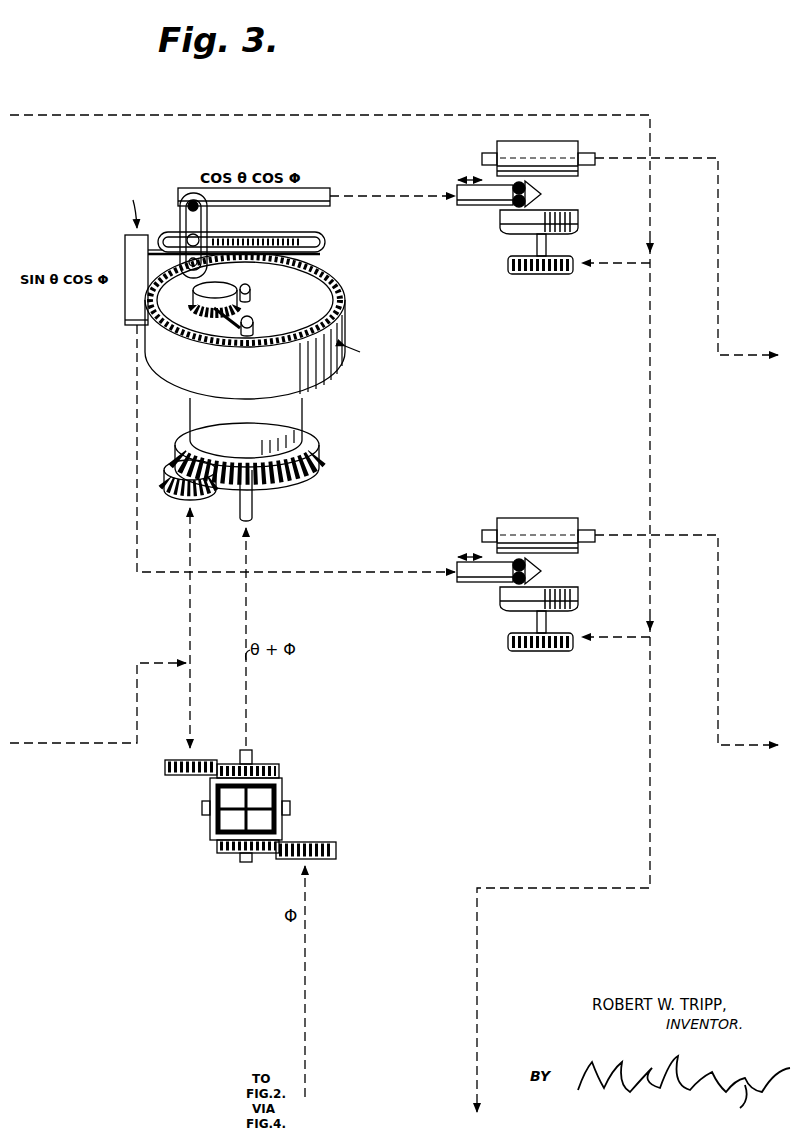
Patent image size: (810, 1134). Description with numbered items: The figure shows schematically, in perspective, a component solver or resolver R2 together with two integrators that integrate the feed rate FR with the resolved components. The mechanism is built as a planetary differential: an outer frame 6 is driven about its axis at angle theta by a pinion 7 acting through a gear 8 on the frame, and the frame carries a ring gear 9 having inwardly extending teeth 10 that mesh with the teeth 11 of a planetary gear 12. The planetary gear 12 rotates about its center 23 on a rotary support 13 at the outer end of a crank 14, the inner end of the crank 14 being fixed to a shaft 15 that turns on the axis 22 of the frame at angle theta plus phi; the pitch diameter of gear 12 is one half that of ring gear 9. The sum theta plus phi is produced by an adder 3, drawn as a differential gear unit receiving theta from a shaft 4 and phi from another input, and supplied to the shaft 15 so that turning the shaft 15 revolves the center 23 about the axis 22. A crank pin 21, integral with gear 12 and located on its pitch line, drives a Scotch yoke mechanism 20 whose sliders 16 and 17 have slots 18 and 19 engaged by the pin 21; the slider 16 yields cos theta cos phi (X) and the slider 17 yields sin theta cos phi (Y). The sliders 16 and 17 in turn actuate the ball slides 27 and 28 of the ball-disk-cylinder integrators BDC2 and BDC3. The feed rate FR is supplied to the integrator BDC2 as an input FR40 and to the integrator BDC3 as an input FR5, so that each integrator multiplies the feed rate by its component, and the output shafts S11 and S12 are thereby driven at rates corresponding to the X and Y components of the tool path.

The adder 3 is at (282, 780).
The shaft 4 is at (44, 745).
The outer frame 6 is at (338, 363).
The pinion 7 is at (172, 490).
The gear 8 is at (296, 472).
The ring gear 9 is at (341, 315).
The inwardly extending teeth 10 is at (316, 302).
The teeth 11 is at (250, 284).
The planetary gear 12 is at (217, 283).
The rotary support 13 is at (248, 303).
The crank 14 is at (254, 324).
The shaft 15 is at (253, 498).
The slider 16 is at (324, 190).
The slider 17 is at (127, 243).
The slot 18 is at (186, 203).
The slot 19 is at (167, 240).
The Scotch yoke mechanism 20 is at (126, 204).
The crank pin 21 is at (200, 238).
The axis 22 is at (246, 419).
The center 23 is at (216, 312).
The ball slide 27 is at (470, 203).
The ball slide 28 is at (472, 580).
The resolver R2 is at (364, 355).
The ball-disk-cylinder integrator BDC2 is at (562, 142).
The ball-disk-cylinder integrator BDC3 is at (538, 575).
The feed rate FR is at (263, 115).
The feed rate input FR40 is at (612, 255).
The feed rate input FR5 is at (628, 637).
The shaft S11 is at (716, 296).
The shaft S12 is at (716, 686).